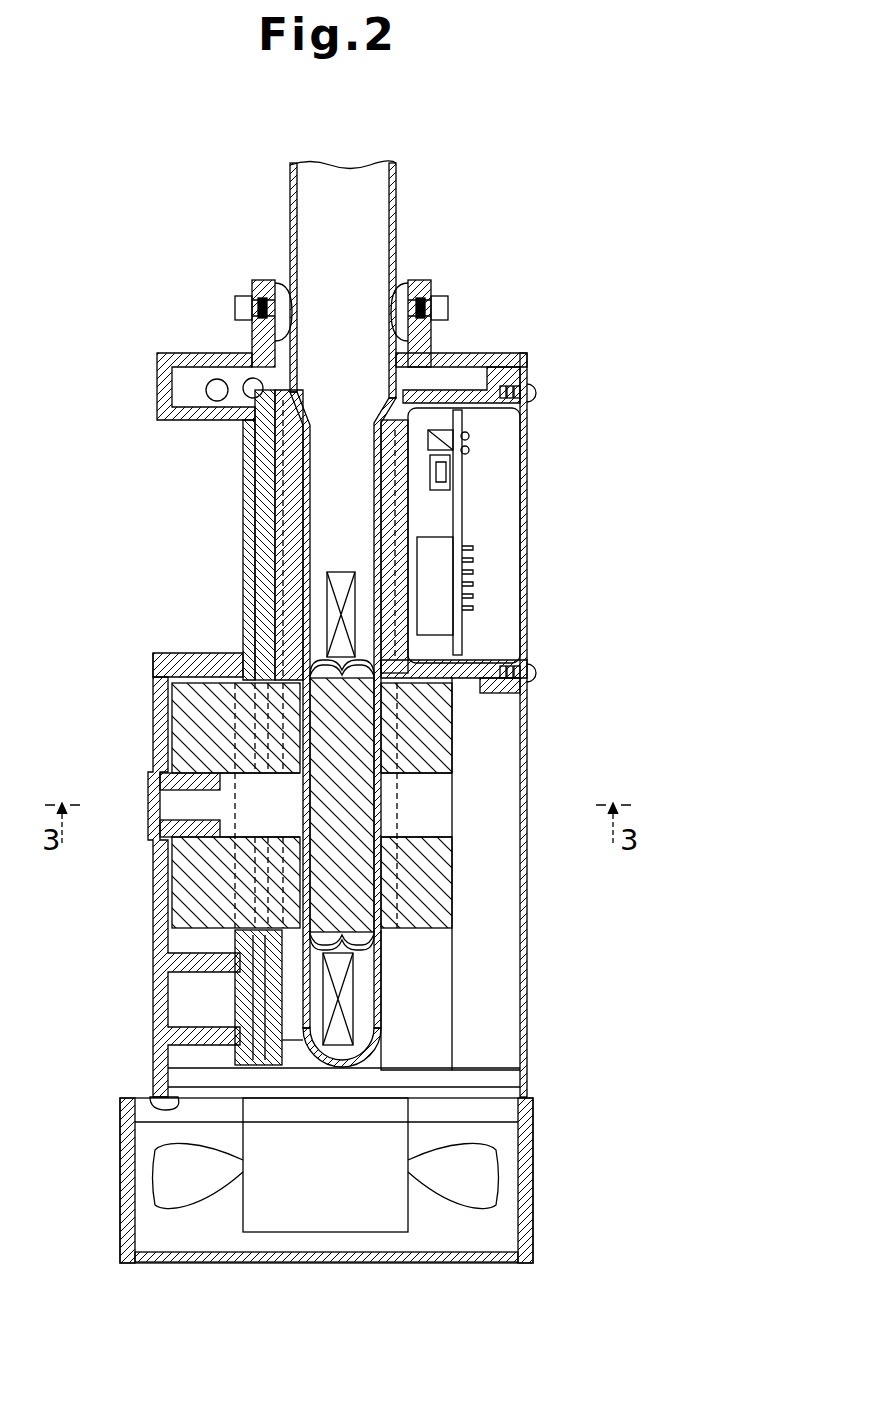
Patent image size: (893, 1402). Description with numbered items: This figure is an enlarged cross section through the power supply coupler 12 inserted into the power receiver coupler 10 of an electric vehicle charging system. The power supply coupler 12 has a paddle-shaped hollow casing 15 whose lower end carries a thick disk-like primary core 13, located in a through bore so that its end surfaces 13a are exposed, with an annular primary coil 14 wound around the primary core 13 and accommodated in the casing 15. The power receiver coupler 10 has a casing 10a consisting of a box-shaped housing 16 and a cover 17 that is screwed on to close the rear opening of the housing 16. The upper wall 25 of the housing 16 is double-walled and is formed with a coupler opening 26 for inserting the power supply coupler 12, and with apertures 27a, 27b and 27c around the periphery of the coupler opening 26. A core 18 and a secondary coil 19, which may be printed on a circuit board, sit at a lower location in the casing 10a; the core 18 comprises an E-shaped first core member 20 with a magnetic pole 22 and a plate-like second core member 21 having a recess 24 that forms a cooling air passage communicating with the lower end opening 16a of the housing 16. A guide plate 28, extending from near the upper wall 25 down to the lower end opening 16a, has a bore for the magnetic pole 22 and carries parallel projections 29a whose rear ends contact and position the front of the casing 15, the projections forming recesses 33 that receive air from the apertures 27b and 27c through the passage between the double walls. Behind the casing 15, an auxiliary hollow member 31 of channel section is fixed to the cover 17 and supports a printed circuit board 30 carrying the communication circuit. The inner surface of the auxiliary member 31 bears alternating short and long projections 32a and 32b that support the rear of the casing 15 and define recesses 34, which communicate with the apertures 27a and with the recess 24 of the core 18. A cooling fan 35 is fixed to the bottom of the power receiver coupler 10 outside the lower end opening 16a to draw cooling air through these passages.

The power receiver coupler 10 is at (529, 1040).
The casing 10a is at (528, 623).
The power supply coupler 12 is at (398, 192).
The primary core 13 is at (320, 790).
The end surfaces 13a is at (303, 822).
The primary coil 14 is at (345, 1067).
The hollow casing 15 is at (290, 224).
The housing 16 is at (155, 714).
The lower end opening 16a is at (163, 1100).
The cover 17 is at (527, 846).
The core 18 is at (454, 937).
The secondary coil 19 is at (258, 1030).
The first core member 20 is at (176, 890).
The second core member 21 is at (433, 960).
The magnetic pole 22 is at (241, 663).
The recess 24 is at (400, 735).
The upper wall 25 is at (185, 423).
The coupler opening 26 is at (290, 290).
The apertures 27a is at (473, 362).
The apertures 27b is at (215, 353).
The apertures 27c is at (253, 382).
The guide plate 28 is at (272, 580).
The projections 29a is at (301, 458).
The printed circuit board 30 is at (457, 535).
The auxiliary hollow member 31 is at (508, 400).
The projections 32a is at (379, 548).
The projections 32b is at (379, 422).
The recesses 33 is at (250, 510).
The recesses 34 is at (397, 507).
The cooling fan 35 is at (388, 1235).